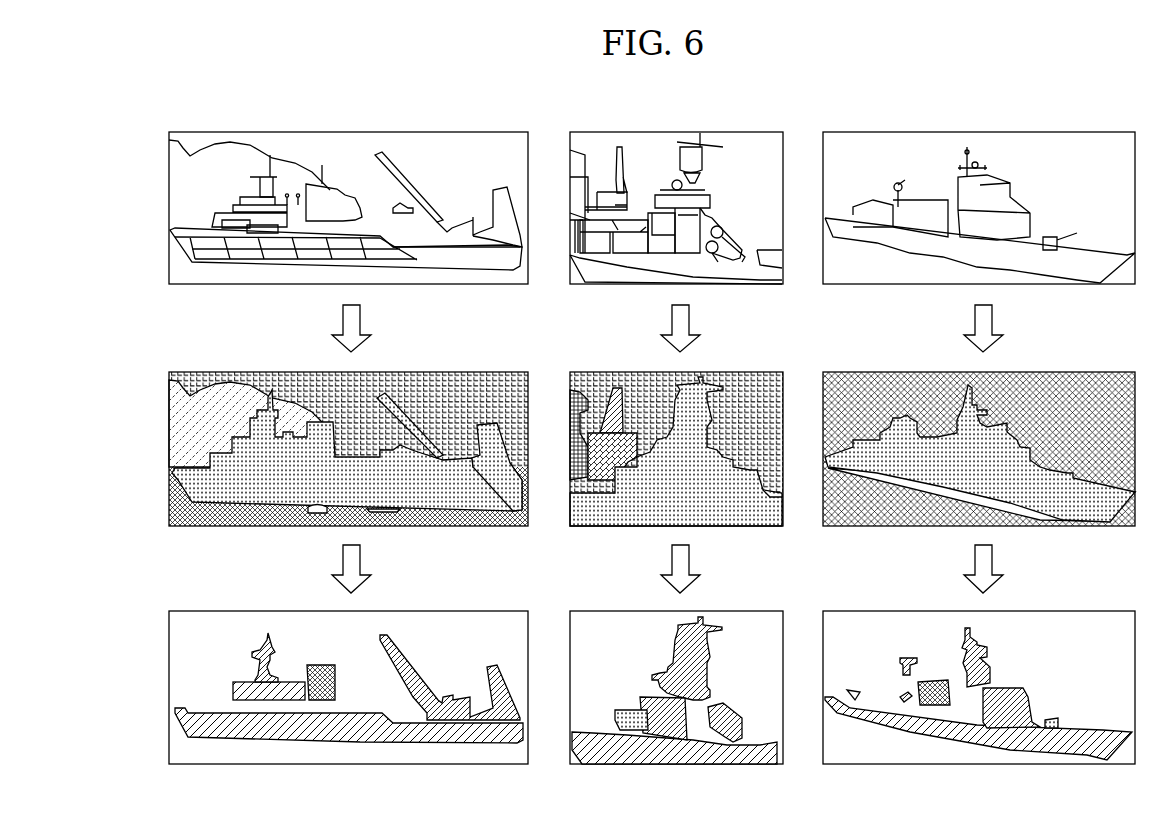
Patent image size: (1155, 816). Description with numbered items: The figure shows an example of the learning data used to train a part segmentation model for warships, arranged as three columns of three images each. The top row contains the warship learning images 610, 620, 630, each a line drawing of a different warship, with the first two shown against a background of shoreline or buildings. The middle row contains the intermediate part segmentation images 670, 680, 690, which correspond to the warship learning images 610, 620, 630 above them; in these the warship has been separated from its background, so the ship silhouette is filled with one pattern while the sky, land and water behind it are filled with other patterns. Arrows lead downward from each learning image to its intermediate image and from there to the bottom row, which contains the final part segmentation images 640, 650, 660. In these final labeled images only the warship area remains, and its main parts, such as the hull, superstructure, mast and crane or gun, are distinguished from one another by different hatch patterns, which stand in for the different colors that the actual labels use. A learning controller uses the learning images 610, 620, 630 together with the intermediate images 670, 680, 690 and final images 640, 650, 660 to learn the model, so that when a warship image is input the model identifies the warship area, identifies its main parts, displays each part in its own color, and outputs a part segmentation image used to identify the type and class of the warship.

The warship learning image 610 is at (447, 132).
The warship learning image 620 is at (775, 132).
The warship learning image 630 is at (1080, 132).
The intermediate part segmentation image 670 is at (447, 372).
The intermediate part segmentation image 680 is at (775, 372).
The intermediate part segmentation image 690 is at (1080, 372).
The final part segmentation image 640 is at (447, 611).
The final part segmentation image 650 is at (775, 611).
The final part segmentation image 660 is at (1080, 611).